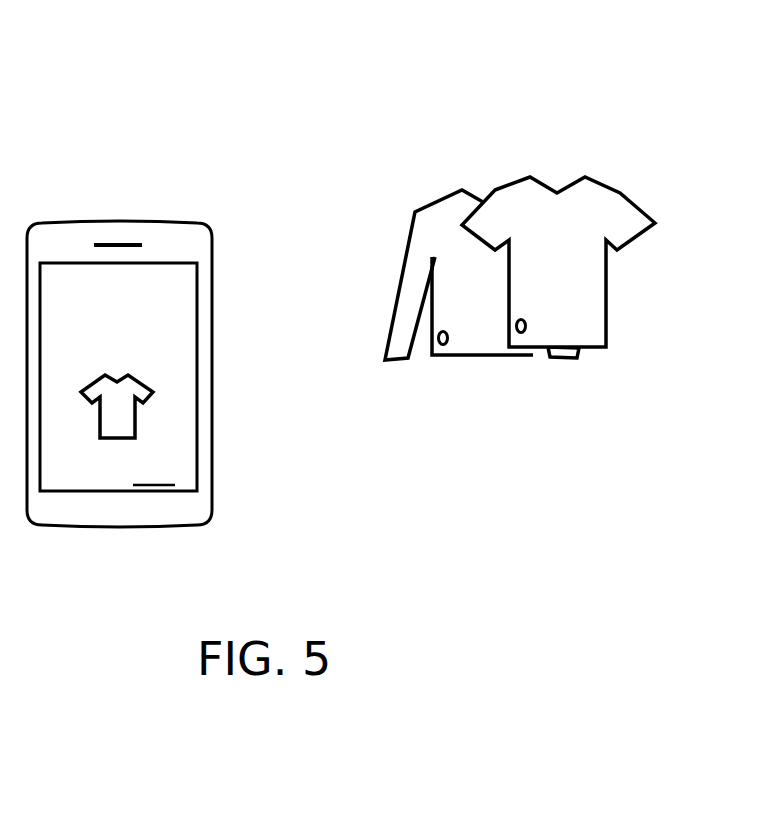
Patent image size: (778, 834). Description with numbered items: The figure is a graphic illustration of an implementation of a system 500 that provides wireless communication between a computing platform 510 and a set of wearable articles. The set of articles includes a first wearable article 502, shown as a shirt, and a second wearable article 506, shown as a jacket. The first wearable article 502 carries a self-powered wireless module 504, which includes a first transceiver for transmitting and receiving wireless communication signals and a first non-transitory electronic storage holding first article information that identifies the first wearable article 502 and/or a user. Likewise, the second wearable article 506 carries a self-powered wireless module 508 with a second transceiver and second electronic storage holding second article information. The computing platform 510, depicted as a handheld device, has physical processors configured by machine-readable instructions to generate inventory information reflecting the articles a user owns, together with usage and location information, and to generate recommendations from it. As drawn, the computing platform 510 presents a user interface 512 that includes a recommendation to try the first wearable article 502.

The system 500 is at (484, 66).
The first wearable article 502 is at (610, 200).
The self-powered wireless module 504 is at (522, 332).
The second wearable article 506 is at (415, 211).
The self-powered wireless module 508 is at (443, 344).
The computing platform 510 is at (119, 317).
The user interface 512 is at (154, 474).